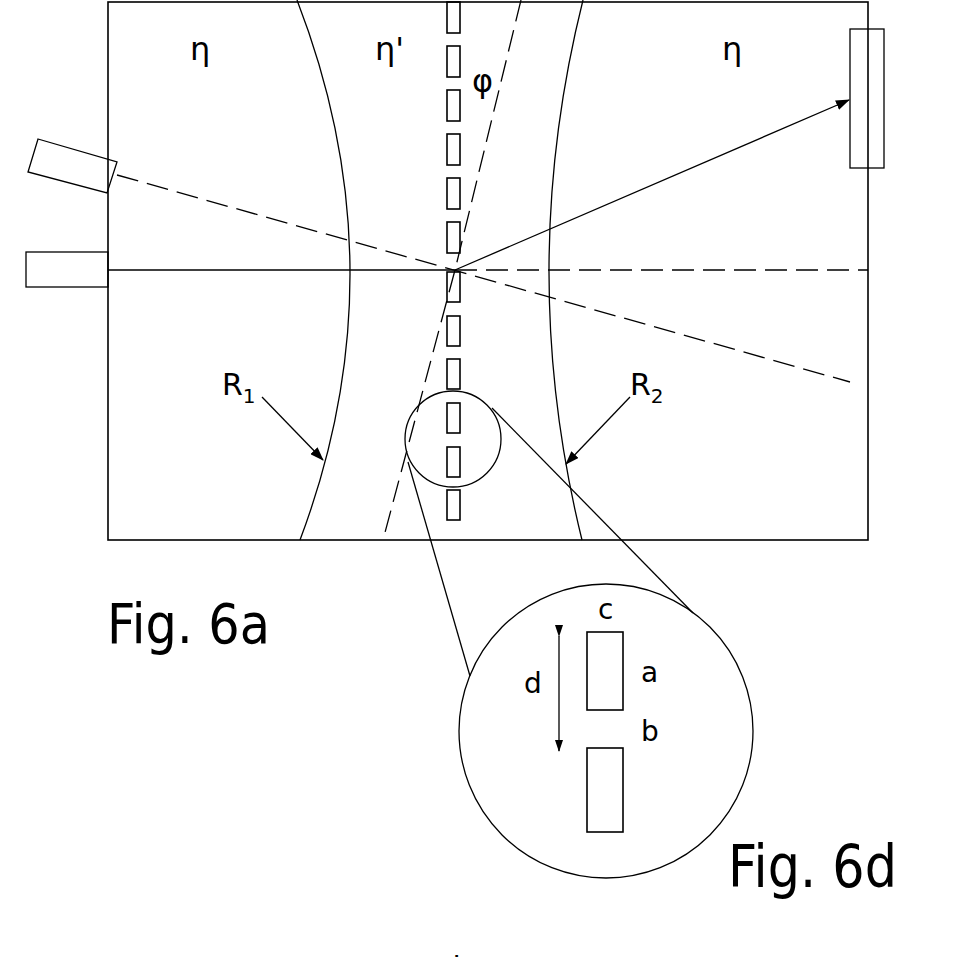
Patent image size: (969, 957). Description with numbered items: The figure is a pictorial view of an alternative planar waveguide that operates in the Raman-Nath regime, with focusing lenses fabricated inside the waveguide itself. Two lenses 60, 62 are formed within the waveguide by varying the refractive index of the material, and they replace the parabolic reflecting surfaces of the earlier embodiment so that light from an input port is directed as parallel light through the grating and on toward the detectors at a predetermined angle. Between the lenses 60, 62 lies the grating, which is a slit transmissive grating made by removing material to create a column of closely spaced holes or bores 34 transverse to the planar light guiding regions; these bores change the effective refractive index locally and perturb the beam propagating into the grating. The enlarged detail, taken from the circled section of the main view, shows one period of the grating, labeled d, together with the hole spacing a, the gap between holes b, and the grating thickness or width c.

The lens 60 is at (339, 133).
The lens 62 is at (561, 133).
The holes or bores 34 is at (461, 414).